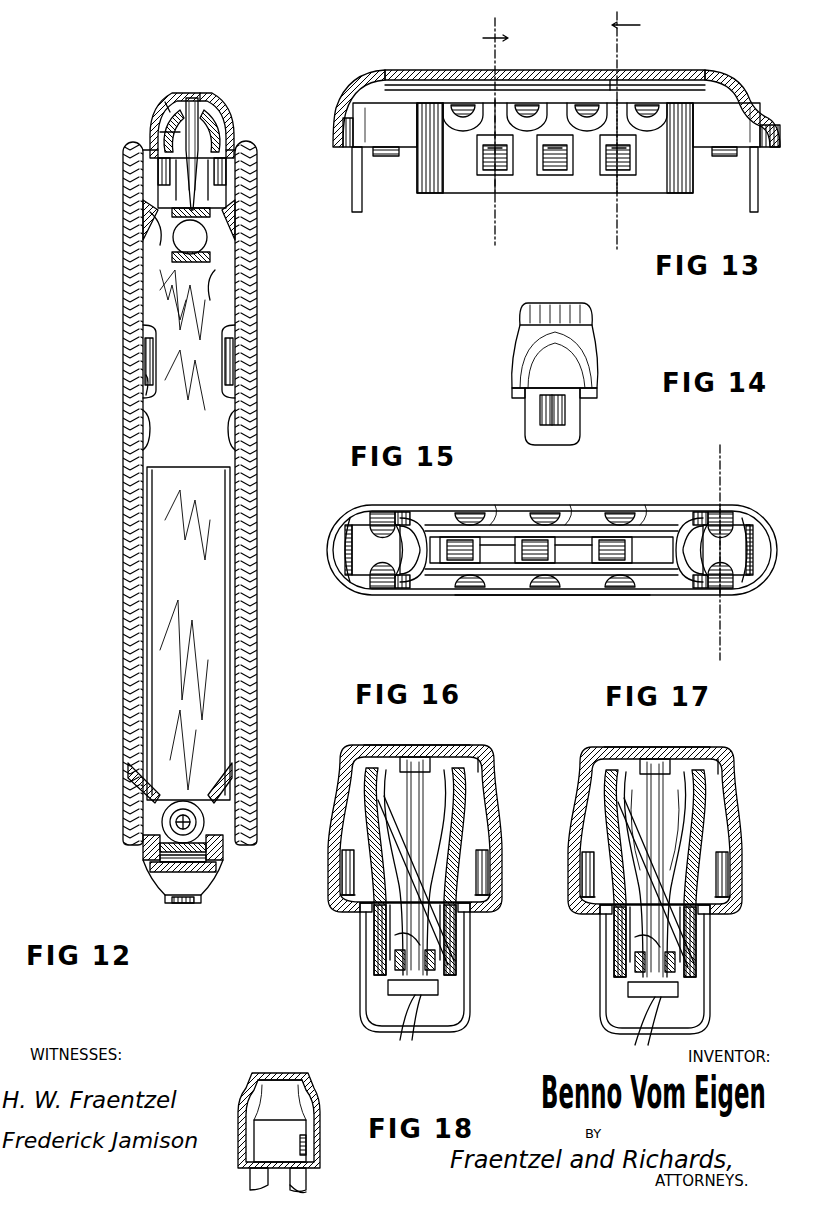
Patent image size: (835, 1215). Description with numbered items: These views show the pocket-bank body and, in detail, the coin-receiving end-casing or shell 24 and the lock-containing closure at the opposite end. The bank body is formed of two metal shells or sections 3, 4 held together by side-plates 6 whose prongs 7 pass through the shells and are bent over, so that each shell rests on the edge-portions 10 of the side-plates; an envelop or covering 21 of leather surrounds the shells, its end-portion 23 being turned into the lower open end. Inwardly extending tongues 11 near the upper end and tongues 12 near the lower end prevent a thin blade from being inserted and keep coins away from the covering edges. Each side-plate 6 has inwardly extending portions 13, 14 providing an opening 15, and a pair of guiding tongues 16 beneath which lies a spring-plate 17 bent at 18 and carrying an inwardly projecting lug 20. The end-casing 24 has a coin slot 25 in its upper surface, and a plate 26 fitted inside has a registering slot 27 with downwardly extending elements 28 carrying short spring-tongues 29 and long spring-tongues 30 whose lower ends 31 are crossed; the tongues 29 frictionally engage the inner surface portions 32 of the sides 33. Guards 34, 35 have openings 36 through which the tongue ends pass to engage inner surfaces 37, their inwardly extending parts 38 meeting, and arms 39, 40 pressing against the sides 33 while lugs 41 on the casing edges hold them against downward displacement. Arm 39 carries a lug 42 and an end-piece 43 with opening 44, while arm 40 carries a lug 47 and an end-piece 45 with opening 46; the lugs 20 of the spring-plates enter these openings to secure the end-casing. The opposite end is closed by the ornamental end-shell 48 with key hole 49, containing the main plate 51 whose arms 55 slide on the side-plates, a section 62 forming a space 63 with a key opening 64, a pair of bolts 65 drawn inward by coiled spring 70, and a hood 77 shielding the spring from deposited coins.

In FIG. 12, the metal shell or section 3 is at (240, 392).
In FIG. 12, the metal shell or section 4 is at (128, 303).
In FIG. 12, the side-plate 6 is at (215, 300).
In FIG. 12, the prong 7 is at (143, 440).
In FIG. 12, the edge-portion of side-plate 10 is at (258, 292).
In FIG. 12, the inwardly extending tongue 11 is at (150, 207).
In FIG. 12, the inwardly extending tongue 12 is at (128, 775).
In FIG. 12, the inwardly extending portion 13 is at (170, 252).
In FIG. 12, the inwardly extending portion 14 is at (208, 222).
In FIG. 12, the opening or hole 15 is at (208, 256).
In FIG. 12, the retaining or guiding tongue 16 is at (148, 356).
In FIG. 13, the retaining or guiding tongue 16 is at (500, 38).
In FIG. 13, the spring-plate 17 is at (622, 25).
In FIG. 15, the bend of spring-plate 18 is at (736, 550).
In FIG. 12, the inwardly projecting tongue or lug 20 is at (200, 237).
In FIG. 12, the envelop or covering 21 is at (143, 330).
In FIG. 12, the end-portion of covering 23 is at (143, 843).
In FIG. 12, the coin-receiving end-casing or shell 24 is at (178, 96).
In FIG. 13, the coin-receiving end-casing or shell 24 is at (400, 80).
In FIG. 14, the coin-receiving end-casing or shell 24 is at (590, 335).
In FIG. 15, the coin-receiving end-casing or shell 24 is at (560, 597).
In FIG. 16, the coin-receiving end-casing or shell 24 is at (462, 748).
In FIG. 17, the coin-receiving end-casing or shell 24 is at (722, 752).
In FIG. 18, the coin-receiving end-casing or shell 24 is at (288, 1075).
In FIG. 12, the coin slot or opening 25 is at (191, 96).
In FIG. 13, the coin slot or opening 25 is at (617, 80).
In FIG. 16, the coin slot or opening 25 is at (420, 760).
In FIG. 17, the coin slot or opening 25 is at (652, 762).
In FIG. 12, the plate or member 26 is at (208, 96).
In FIG. 16, the plate or member 26 is at (482, 760).
In FIG. 17, the plate or member 26 is at (700, 757).
In FIG. 16, the slot of plate 27 is at (405, 760).
In FIG. 17, the slot of plate 27 is at (660, 762).
In FIG. 12, the downwardly extending element 28 is at (168, 104).
In FIG. 13, the downwardly extending element 28 is at (445, 90).
In FIG. 16, the downwardly extending element 28 is at (355, 790).
In FIG. 17, the downwardly extending element 28 is at (728, 782).
In FIG. 12, the short outwardly extending spring-tongue 29 is at (162, 122).
In FIG. 13, the short outwardly extending spring-tongue 29 is at (465, 108).
In FIG. 15, the short outwardly extending spring-tongue 29 is at (470, 513).
In FIG. 16, the short outwardly extending spring-tongue 29 is at (360, 822).
In FIG. 17, the short outwardly extending spring-tongue 29 is at (708, 838).
In FIG. 12, the longitudinally extending spring-tongue 30 is at (155, 152).
In FIG. 13, the longitudinally extending spring-tongue 30 is at (503, 170).
In FIG. 15, the longitudinally extending spring-tongue 30 is at (622, 537).
In FIG. 16, the longitudinally extending spring-tongue 30 is at (374, 925).
In FIG. 17, the longitudinally extending spring-tongue 30 is at (700, 920).
In FIG. 13, the lower end-portion of tongue 31 is at (488, 170).
In FIG. 15, the lower end-portion of tongue 31 is at (455, 540).
In FIG. 16, the lower end-portion of tongue 31 is at (390, 960).
In FIG. 17, the lower end-portion of tongue 31 is at (630, 965).
In FIG. 16, the inner surface portion 32 is at (342, 860).
In FIG. 17, the inner surface portion 32 is at (655, 874).
In FIG. 16, the side of end-shell 33 is at (330, 890).
In FIG. 17, the side of end-shell 33 is at (740, 872).
In FIG. 12, the guard or plate 34 is at (160, 135).
In FIG. 15, the guard or plate 34 is at (540, 563).
In FIG. 16, the guard or plate 34 is at (395, 960).
In FIG. 17, the guard or plate 34 is at (640, 930).
In FIG. 13, the guard or plate 35 is at (583, 195).
In FIG. 15, the guard or plate 35 is at (548, 537).
In FIG. 16, the guard or plate 35 is at (445, 940).
In FIG. 17, the guard or plate 35 is at (665, 975).
In FIG. 12, the opening in guard 36 is at (178, 182).
In FIG. 13, the opening in guard 36 is at (576, 154).
In FIG. 16, the opening in guard 36 is at (388, 940).
In FIG. 17, the opening in guard 36 is at (690, 935).
In FIG. 16, the inner surface portion of guard 37 is at (406, 1029).
In FIG. 17, the inner surface portion of guard 37 is at (638, 1032).
In FIG. 13, the inwardly extending part 38 is at (425, 193).
In FIG. 14, the inwardly extending part 38 is at (540, 413).
In FIG. 15, the inwardly extending part 38 is at (405, 512).
In FIG. 16, the inwardly extending part 38 is at (414, 872).
In FIG. 17, the inwardly extending part 38 is at (660, 805).
In FIG. 13, the arm 39 is at (732, 118).
In FIG. 15, the arm 39 is at (365, 512).
In FIG. 18, the arm 39 is at (318, 1125).
In FIG. 13, the arm 40 is at (358, 108).
In FIG. 15, the arm 40 is at (680, 505).
In FIG. 18, the arm 40 is at (240, 1135).
In FIG. 13, the lug or holding tongue 41 is at (386, 157).
In FIG. 14, the lug or holding tongue 41 is at (515, 390).
In FIG. 15, the lug or holding tongue 41 is at (385, 512).
In FIG. 16, the lug or holding tongue 41 is at (358, 908).
In FIG. 17, the lug or holding tongue 41 is at (712, 910).
In FIG. 18, the lug or holding tongue 41 is at (252, 1172).
In FIG. 15, the holding tongue or lug 42 is at (350, 575).
In FIG. 12, the downwardly extending member or end-piece 43 is at (150, 225).
In FIG. 13, the downwardly extending member or end-piece 43 is at (758, 212).
In FIG. 15, the downwardly extending member or end-piece 43 is at (752, 580).
In FIG. 16, the downwardly extending member or end-piece 43 is at (470, 1008).
In FIG. 17, the downwardly extending member or end-piece 43 is at (655, 974).
In FIG. 18, the downwardly extending member or end-piece 43 is at (306, 1192).
In FIG. 16, the opening in end-piece 44 is at (440, 990).
In FIG. 17, the opening in end-piece 44 is at (680, 992).
In FIG. 13, the downwardly extending member or end-piece 45 is at (356, 212).
In FIG. 14, the downwardly extending member or end-piece 45 is at (578, 435).
In FIG. 15, the downwardly extending member or end-piece 45 is at (352, 535).
In FIG. 14, the opening in end-piece 46 is at (560, 420).
In FIG. 13, the short holding tongue or lug 47 is at (765, 148).
In FIG. 15, the short holding tongue or lug 47 is at (754, 530).
In FIG. 18, the short holding tongue or lug 47 is at (320, 1150).
In FIG. 12, the ornamental end-shell or casing 48 is at (204, 902).
In FIG. 12, the key-receiving hole 49 is at (185, 903).
In FIG. 12, the main plate or body 51 is at (150, 852).
In FIG. 12, the rearwardly extending arm 55 is at (212, 512).
In FIG. 12, the section or element 62 is at (216, 882).
In FIG. 12, the space 63 is at (150, 870).
In FIG. 12, the key-receiving opening 64 is at (176, 875).
In FIG. 12, the bolt 65 is at (222, 857).
In FIG. 12, the coiled spring 70 is at (198, 815).
In FIG. 12, the hood, shell or casing 77 is at (183, 800).